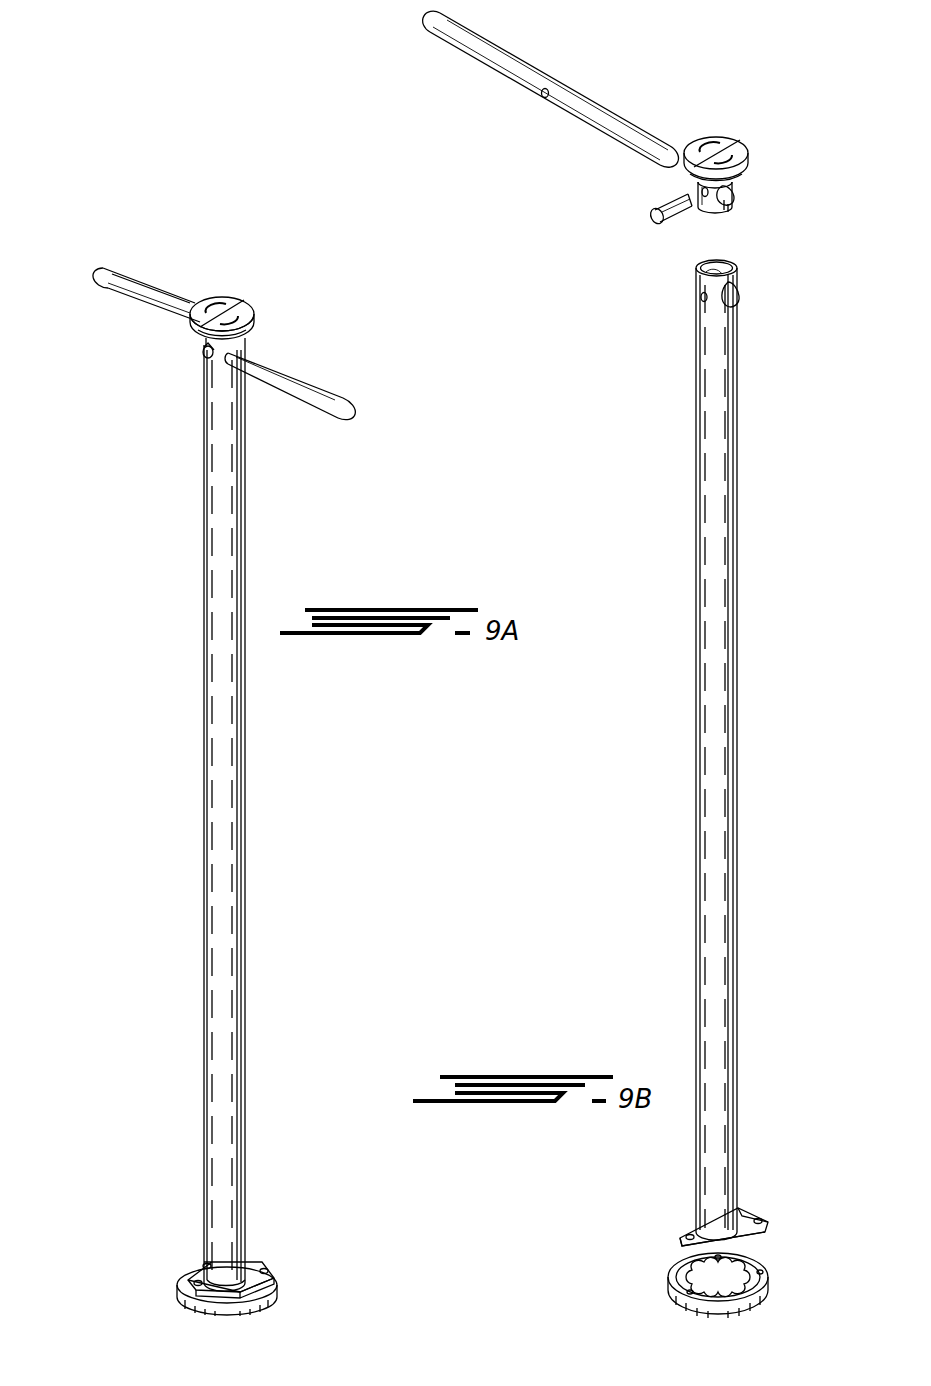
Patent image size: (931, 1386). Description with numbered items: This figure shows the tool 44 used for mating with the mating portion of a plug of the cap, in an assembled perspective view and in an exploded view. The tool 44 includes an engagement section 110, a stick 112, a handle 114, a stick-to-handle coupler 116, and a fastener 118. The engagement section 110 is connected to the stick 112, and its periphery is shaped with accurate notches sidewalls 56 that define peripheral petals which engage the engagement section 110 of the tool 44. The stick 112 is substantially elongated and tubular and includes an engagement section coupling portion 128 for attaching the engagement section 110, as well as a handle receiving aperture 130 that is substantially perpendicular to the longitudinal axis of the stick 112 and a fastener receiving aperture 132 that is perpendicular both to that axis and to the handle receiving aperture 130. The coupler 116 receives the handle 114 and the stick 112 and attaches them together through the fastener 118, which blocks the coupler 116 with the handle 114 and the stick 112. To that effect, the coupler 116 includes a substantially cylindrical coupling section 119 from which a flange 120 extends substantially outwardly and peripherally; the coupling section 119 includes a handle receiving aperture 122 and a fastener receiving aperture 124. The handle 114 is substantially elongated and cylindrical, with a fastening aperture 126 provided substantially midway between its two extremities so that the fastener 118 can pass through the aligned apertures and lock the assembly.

In FIG. 9A, the tool 44 is at (248, 768).
In FIG. 9B, the tool 44 is at (738, 706).
In FIG. 9B, the accurate notches sidewalls 56 is at (763, 1281).
In FIG. 9A, the engagement section 110 is at (180, 1284).
In FIG. 9B, the engagement section 110 is at (672, 1276).
In FIG. 9A, the stick 112 is at (210, 838).
In FIG. 9B, the stick 112 is at (702, 775).
In FIG. 9A, the handle 114 is at (157, 296).
In FIG. 9B, the handle 114 is at (632, 118).
In FIG. 9B, the stick-to-handle coupler 116 is at (700, 205).
In FIG. 9A, the fastener 118 is at (205, 356).
In FIG. 9B, the fastener 118 is at (647, 218).
In FIG. 9B, the coupling section 119 is at (732, 185).
In FIG. 9A, the flange 120 is at (252, 303).
In FIG. 9B, the flange 120 is at (735, 142).
In FIG. 9B, the handle receiving aperture 122 is at (725, 212).
In FIG. 9B, the fastener receiving aperture 124 is at (700, 190).
In FIG. 9B, the fastening aperture 126 is at (540, 96).
In FIG. 9A, the engagement section coupling portion 128 is at (262, 1265).
In FIG. 9B, the engagement section coupling portion 128 is at (745, 1205).
In FIG. 9B, the handle receiving aperture 130 is at (742, 296).
In FIG. 9B, the fastener receiving aperture 132 is at (700, 299).